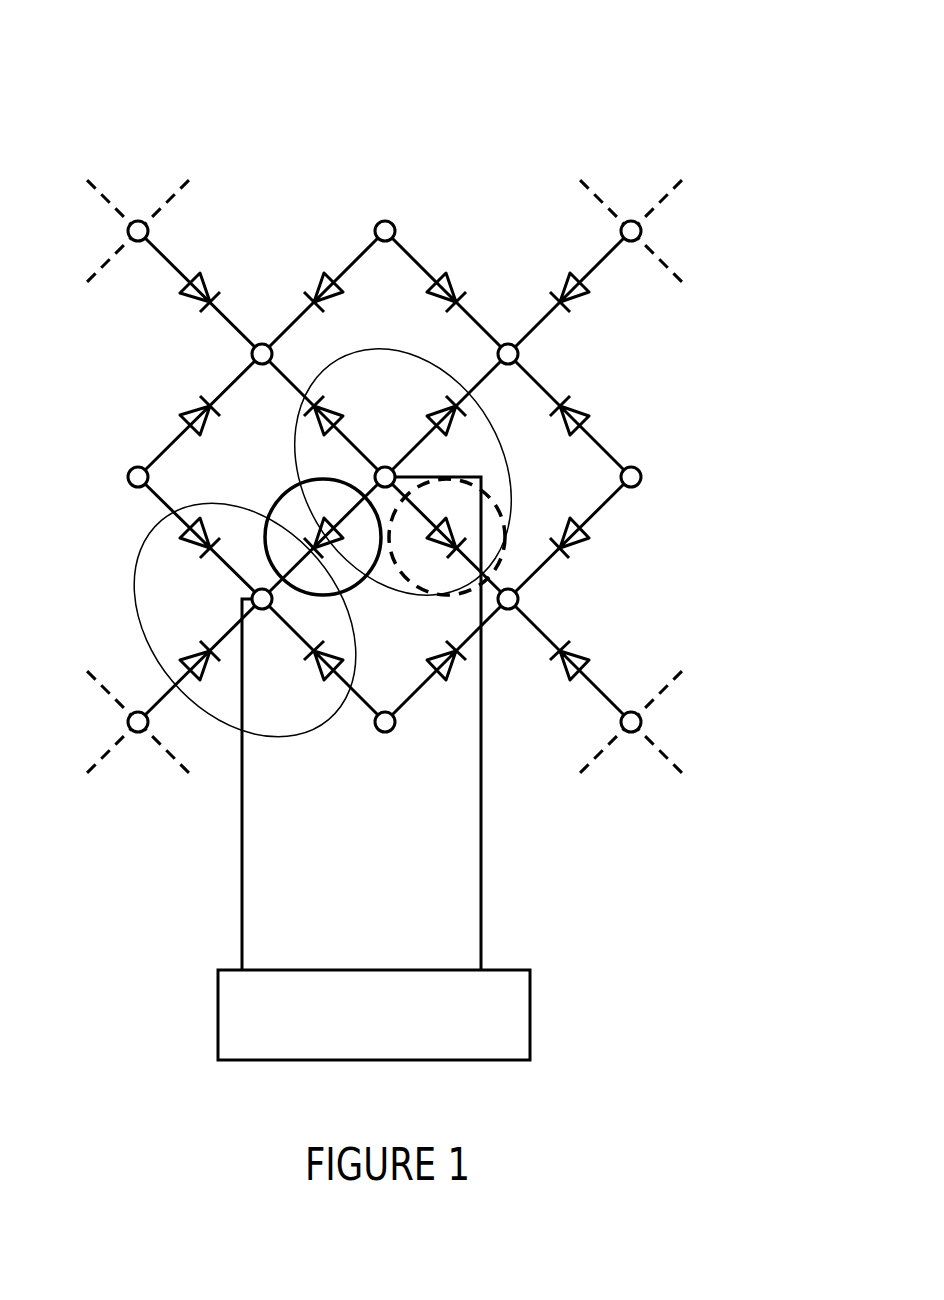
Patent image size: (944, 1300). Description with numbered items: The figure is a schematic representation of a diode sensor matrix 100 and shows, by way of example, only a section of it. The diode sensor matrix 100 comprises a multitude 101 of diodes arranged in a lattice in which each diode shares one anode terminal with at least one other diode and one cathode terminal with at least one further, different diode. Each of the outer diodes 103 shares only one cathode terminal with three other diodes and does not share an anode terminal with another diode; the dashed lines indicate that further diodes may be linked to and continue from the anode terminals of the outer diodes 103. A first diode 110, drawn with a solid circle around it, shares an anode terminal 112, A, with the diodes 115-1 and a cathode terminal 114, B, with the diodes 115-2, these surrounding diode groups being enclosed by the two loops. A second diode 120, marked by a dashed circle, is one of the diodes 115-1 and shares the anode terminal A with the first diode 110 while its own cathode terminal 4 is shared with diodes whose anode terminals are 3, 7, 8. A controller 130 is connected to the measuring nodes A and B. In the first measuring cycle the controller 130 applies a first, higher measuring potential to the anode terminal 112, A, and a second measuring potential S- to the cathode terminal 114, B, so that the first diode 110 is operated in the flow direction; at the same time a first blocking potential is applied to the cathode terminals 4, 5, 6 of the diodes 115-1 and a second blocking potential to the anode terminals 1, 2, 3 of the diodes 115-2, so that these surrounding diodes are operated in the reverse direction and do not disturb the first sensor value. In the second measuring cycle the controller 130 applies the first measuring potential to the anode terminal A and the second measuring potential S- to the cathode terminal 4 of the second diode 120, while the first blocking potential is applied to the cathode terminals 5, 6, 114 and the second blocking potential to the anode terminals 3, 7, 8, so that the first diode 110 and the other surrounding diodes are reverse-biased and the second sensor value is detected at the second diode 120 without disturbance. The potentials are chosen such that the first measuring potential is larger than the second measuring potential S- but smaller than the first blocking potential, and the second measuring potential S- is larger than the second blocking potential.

The diode sensor matrix 100 is at (62, 45).
The multitude of diodes 101 is at (484, 262).
The outer diode 103 is at (640, 292).
The anode terminal 1 is at (132, 484).
The anode terminal 2 is at (138, 734).
The anode terminal 3 is at (378, 731).
The cathode terminal 4 is at (508, 610).
The cathode terminal 5 is at (519, 354).
The cathode terminal 6 is at (262, 343).
The anode terminal 7 is at (632, 734).
The anode terminal 8 is at (640, 483).
The first diode 110 is at (359, 589).
The anode terminal 112 is at (352, 462).
The cathode terminal 114 is at (244, 590).
The diodes sharing an anode terminal 115-1 is at (522, 466).
The diodes sharing a cathode terminal 115-2 is at (222, 738).
The second diode 120 is at (514, 572).
The controller 130 is at (530, 1026).
The anode terminal A is at (385, 466).
The cathode terminal B is at (262, 610).
The second measuring potential S- is at (242, 916).